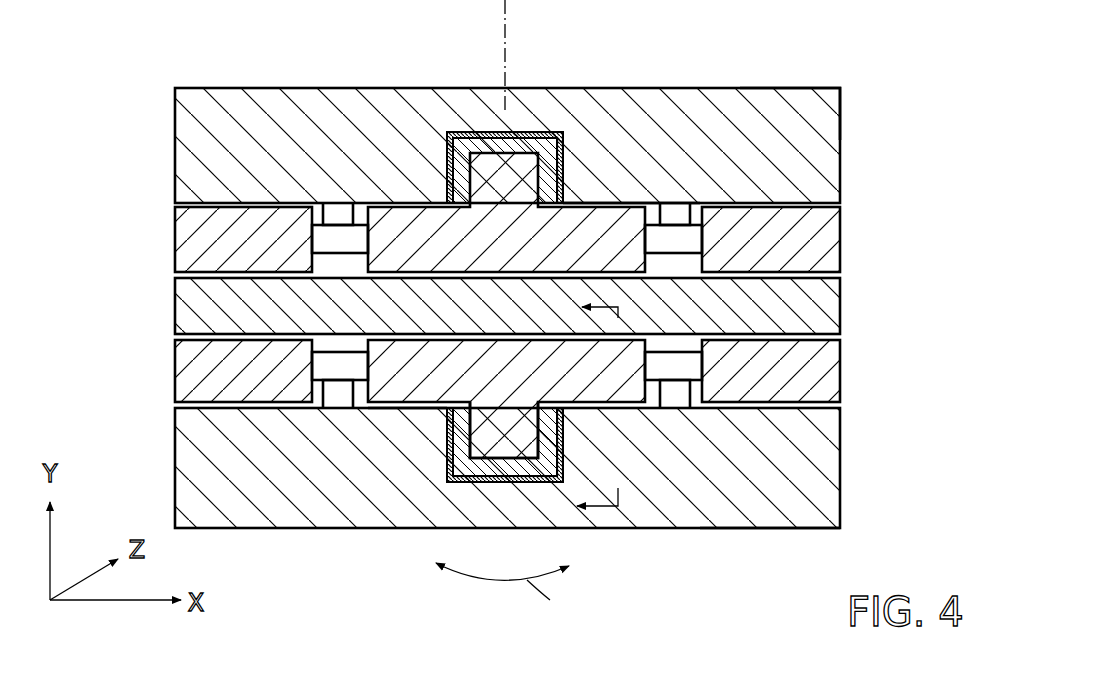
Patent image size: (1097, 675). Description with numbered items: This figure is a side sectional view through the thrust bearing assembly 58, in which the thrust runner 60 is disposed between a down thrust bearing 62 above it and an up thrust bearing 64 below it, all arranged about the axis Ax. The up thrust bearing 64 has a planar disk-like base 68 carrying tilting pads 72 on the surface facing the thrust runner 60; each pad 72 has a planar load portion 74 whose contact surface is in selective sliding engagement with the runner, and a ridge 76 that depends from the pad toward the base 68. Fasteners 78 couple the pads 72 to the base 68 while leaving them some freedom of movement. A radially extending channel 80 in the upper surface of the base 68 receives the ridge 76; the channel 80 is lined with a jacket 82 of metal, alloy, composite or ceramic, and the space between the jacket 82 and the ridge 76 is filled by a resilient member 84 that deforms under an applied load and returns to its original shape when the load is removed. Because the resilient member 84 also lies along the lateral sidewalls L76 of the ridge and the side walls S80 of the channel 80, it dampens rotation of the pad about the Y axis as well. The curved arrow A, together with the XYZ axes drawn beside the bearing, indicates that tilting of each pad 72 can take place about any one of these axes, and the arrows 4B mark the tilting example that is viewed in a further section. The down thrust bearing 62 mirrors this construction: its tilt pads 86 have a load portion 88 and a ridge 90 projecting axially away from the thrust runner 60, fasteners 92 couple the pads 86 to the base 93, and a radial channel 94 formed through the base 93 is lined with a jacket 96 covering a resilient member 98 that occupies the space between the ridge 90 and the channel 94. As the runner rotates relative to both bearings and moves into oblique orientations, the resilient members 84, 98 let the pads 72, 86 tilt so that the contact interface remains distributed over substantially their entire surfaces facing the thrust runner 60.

The thrust bearing assembly 58 is at (237, 70).
The thrust runner 60 is at (858, 310).
The down thrust bearing 62 is at (865, 150).
The up thrust bearing 64 is at (851, 465).
The base 68 is at (788, 508).
The tilting pads 72 is at (405, 411).
The load portion 74 is at (414, 386).
The ridge 76 is at (533, 430).
The fasteners 78 is at (318, 403).
The channel 80 is at (549, 502).
The jacket 82 is at (447, 462).
The resilient member 84 is at (513, 470).
The tilt pads 86 is at (611, 203).
The load portion 88 is at (597, 252).
The ridge 90 is at (517, 117).
The fasteners 92 is at (330, 197).
The base 93 is at (768, 103).
The channel 94 is at (530, 128).
The jacket 96 is at (566, 146).
The resilient member 98 is at (450, 130).
The axis Ax is at (505, 22).
The section view indicator 4B is at (623, 403).
The curved arrow A is at (503, 594).
The lateral sidewalls L76 is at (478, 420).
The side walls S80 is at (447, 455).